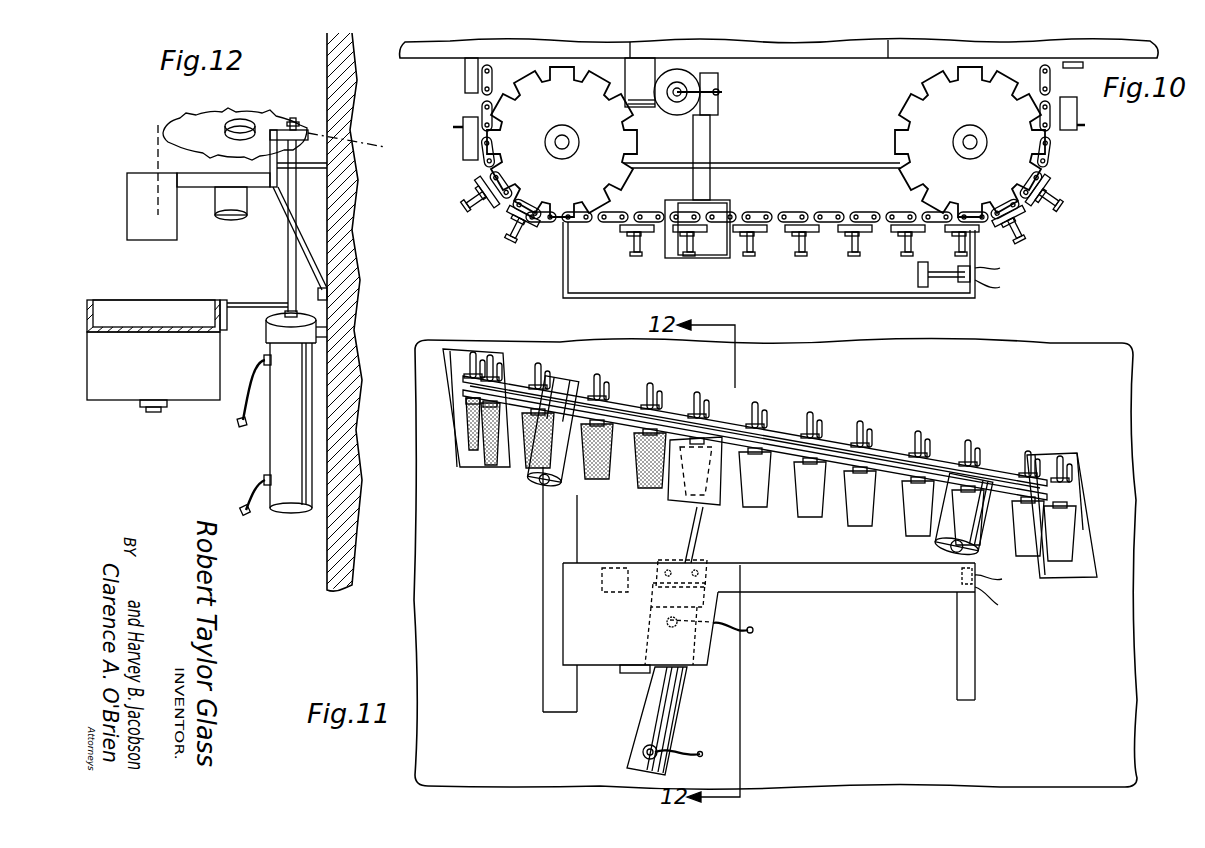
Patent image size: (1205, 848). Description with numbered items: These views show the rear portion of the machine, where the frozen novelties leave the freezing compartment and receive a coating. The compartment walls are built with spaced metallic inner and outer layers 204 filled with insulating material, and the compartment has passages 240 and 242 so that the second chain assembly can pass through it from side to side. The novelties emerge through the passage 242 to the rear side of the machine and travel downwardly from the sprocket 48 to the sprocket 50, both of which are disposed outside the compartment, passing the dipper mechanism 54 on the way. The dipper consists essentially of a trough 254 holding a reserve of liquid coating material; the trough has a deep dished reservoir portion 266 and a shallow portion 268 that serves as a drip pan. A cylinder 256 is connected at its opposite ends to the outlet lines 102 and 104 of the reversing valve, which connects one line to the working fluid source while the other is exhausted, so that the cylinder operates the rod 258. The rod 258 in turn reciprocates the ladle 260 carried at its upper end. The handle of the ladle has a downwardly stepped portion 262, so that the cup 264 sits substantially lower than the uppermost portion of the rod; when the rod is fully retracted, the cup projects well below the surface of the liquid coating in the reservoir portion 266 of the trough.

In FIG. 10, the sprocket 48 is at (610, 146).
In FIG. 10, the sprocket 50 is at (1030, 153).
In FIG. 10, the dipper mechanism 54 is at (738, 261).
In FIG. 11, the passage 242 is at (507, 367).
In FIG. 11, the passage 240 is at (1090, 507).
In FIG. 11, the rod 258 is at (690, 527).
In FIG. 12, the rod 258 is at (296, 224).
In FIG. 11, the trough 254 is at (716, 561).
In FIG. 11, the outlet line 102 is at (752, 628).
In FIG. 12, the outlet line 102 is at (242, 430).
In FIG. 11, the shallow portion of the trough 268 is at (885, 588).
In FIG. 12, the shallow portion of the trough 268 is at (163, 328).
In FIG. 11, the deep dished reservoir portion 266 is at (600, 655).
In FIG. 12, the deep dished reservoir portion 266 is at (198, 360).
In FIG. 11, the cylinder 256 is at (688, 697).
In FIG. 11, the metallic inner and outer layers 204 is at (690, 752).
In FIG. 12, the downwardly stepped portion 262 is at (259, 127).
In FIG. 12, the cup 264 is at (130, 198).
In FIG. 12, the ladle 260 is at (182, 233).
In FIG. 12, the outlet line 104 is at (250, 514).